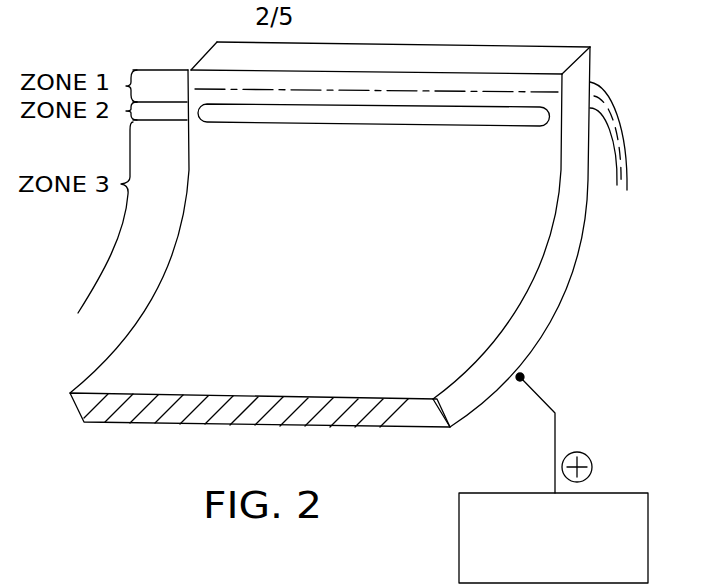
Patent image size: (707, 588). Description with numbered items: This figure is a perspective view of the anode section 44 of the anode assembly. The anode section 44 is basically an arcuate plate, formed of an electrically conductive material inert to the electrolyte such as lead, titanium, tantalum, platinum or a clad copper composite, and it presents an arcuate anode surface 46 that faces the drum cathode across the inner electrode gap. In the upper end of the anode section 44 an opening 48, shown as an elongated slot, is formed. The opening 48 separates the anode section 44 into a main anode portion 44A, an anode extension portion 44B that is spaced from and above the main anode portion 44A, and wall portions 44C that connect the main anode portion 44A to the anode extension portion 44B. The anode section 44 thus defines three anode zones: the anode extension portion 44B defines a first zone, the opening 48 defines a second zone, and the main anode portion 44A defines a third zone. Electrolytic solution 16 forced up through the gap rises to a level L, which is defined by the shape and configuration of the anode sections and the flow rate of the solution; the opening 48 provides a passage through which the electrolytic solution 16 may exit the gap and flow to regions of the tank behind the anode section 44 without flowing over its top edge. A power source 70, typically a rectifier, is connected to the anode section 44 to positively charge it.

The electrolytic solution 16 is at (618, 127).
The anode section 44 is at (573, 277).
The main anode portion 44A is at (528, 328).
The anode extension portion 44B is at (328, 78).
The wall portions 44C is at (193, 110).
The arcuate anode surface 46 is at (160, 343).
The opening 48 is at (475, 115).
The power source 70 is at (613, 493).
The level L is at (432, 90).